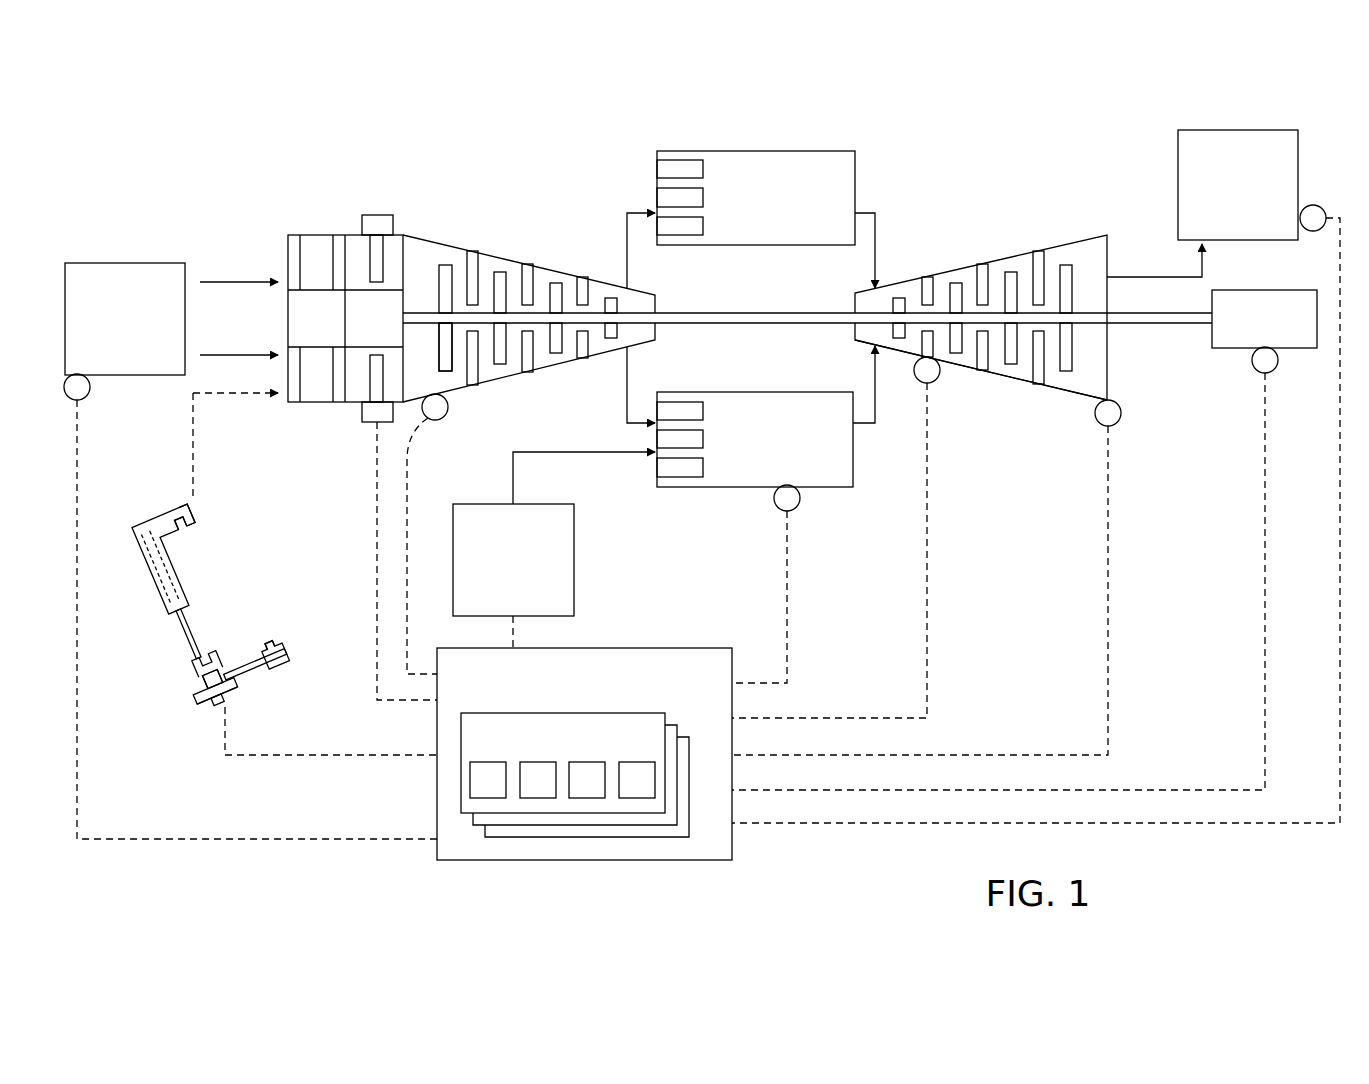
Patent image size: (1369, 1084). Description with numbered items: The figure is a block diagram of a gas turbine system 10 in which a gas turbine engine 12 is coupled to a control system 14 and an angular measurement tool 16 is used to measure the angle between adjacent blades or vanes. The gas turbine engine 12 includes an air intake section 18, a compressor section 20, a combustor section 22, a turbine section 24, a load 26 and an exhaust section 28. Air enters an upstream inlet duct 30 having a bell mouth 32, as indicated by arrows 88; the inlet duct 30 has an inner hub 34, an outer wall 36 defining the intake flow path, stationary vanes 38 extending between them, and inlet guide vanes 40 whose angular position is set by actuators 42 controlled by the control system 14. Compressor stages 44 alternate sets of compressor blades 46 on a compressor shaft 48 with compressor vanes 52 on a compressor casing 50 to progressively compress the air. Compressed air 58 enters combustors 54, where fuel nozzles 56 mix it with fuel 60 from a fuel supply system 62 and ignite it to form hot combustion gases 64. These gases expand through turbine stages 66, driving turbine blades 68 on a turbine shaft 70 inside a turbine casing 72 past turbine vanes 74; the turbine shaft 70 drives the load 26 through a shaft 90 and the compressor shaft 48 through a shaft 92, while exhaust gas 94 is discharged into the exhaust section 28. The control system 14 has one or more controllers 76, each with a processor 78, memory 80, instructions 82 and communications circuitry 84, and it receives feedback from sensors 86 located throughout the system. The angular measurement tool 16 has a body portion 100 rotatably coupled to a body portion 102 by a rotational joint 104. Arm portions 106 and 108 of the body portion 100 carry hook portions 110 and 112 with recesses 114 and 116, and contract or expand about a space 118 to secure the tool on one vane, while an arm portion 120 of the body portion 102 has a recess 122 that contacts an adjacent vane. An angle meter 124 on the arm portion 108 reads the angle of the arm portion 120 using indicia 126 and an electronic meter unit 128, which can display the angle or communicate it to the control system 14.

The gas turbine system 10 is at (1222, 110).
The gas turbine engine 12 is at (1010, 150).
The control system 14 is at (662, 648).
The angular measurement tool 16 is at (153, 730).
The air intake section 18 is at (115, 262).
The compressor section 20 is at (500, 222).
The combustor section 22 is at (792, 128).
The turbine section 24 is at (968, 212).
The load 26 is at (1300, 350).
The exhaust section 28 is at (1300, 162).
The inlet duct 30 is at (290, 403).
The bell mouth 32 is at (288, 234).
The inner hub 34 is at (288, 296).
The outer wall 36 is at (288, 249).
The stationary vanes 38 is at (318, 234).
The inlet guide vanes 40 is at (384, 250).
The actuators 42 is at (375, 214).
The compressor stages 44 is at (582, 381).
The compressor blades 46 is at (446, 374).
The compressor shaft 48 is at (645, 316).
The compressor casing 50 is at (447, 268).
The compressor vanes 52 is at (582, 276).
The combustors 54 is at (806, 152).
The fuel nozzles 56 is at (677, 150).
The compressed air 58 is at (626, 230).
The fuel 60 is at (577, 457).
The fuel supply system 62 is at (574, 560).
The hot combustion gases 64 is at (878, 226).
The turbine stages 66 is at (982, 372).
The turbine blades 68 is at (1011, 268).
The turbine shaft 70 is at (855, 334).
The turbine casing 72 is at (1050, 388).
The turbine vanes 74 is at (928, 284).
The controllers 76 is at (691, 815).
The processor 78 is at (488, 798).
The memory 80 is at (538, 798).
The instructions 82 is at (587, 798).
The communications circuitry 84 is at (637, 798).
The sensors 86 is at (88, 396).
The arrows 88 is at (212, 279).
The shaft 90 is at (1150, 326).
The shaft 92 is at (700, 324).
The exhaust gas 94 is at (1205, 275).
The body portion 100 is at (98, 545).
The body portion 102 is at (273, 670).
The rotational joint 104 is at (207, 678).
The arm portion 106 is at (128, 543).
The arm portion 108 is at (180, 633).
The hook portion 110 is at (157, 506).
The hook portion 112 is at (227, 668).
The recess 114 is at (190, 533).
The recess 116 is at (207, 660).
The space 118 is at (185, 563).
The arm portion 120 is at (287, 652).
The recess 122 is at (273, 648).
The angle meter 124 is at (238, 713).
The indicia 126 is at (213, 697).
The electronic meter unit 128 is at (217, 702).